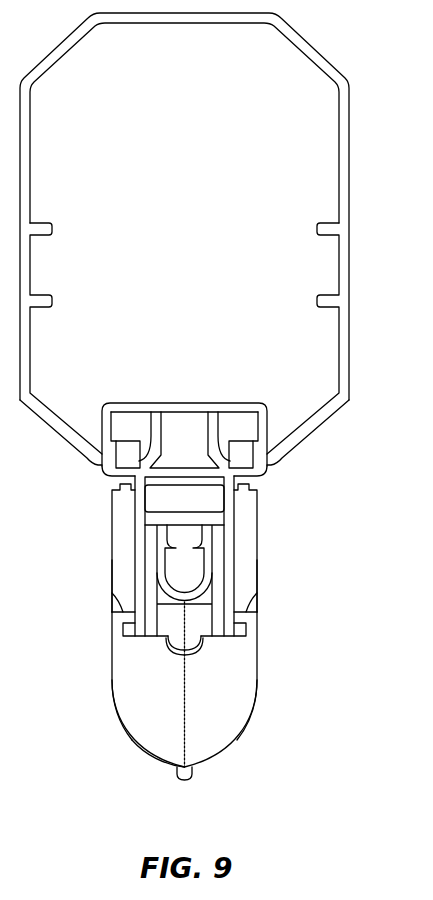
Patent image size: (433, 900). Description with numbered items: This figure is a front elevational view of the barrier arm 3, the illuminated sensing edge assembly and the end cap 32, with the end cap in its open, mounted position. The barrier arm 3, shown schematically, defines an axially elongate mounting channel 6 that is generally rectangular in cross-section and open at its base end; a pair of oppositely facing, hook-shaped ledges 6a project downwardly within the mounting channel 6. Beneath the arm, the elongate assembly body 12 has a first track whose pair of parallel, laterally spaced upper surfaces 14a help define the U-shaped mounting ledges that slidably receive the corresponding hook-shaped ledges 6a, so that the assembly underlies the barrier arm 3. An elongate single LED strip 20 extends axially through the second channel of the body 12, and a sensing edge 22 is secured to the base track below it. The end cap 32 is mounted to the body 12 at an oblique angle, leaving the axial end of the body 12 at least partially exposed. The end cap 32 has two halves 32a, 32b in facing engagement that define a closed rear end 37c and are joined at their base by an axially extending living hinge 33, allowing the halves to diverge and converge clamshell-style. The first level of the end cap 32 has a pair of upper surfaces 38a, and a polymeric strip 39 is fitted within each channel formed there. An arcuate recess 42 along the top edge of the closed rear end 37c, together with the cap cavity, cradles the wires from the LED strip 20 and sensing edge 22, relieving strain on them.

The barrier arm 3 is at (358, 163).
The mounting channel 6 is at (183, 402).
The hook-shaped ledges 6a is at (147, 433).
The upper surfaces 14a is at (133, 438).
The assembly body 12 is at (104, 480).
The LED strip 20 is at (168, 497).
The sensing edge 22 is at (188, 565).
The upper surfaces 38a is at (112, 592).
The arcuate recess 42 is at (193, 640).
The polymeric strip 39 is at (123, 631).
The end cap 32 is at (115, 730).
The first half of end cap 32a is at (113, 694).
The second half of end cap 32b is at (256, 694).
The closed rear end 37c is at (162, 733).
The living hinge 33 is at (192, 779).